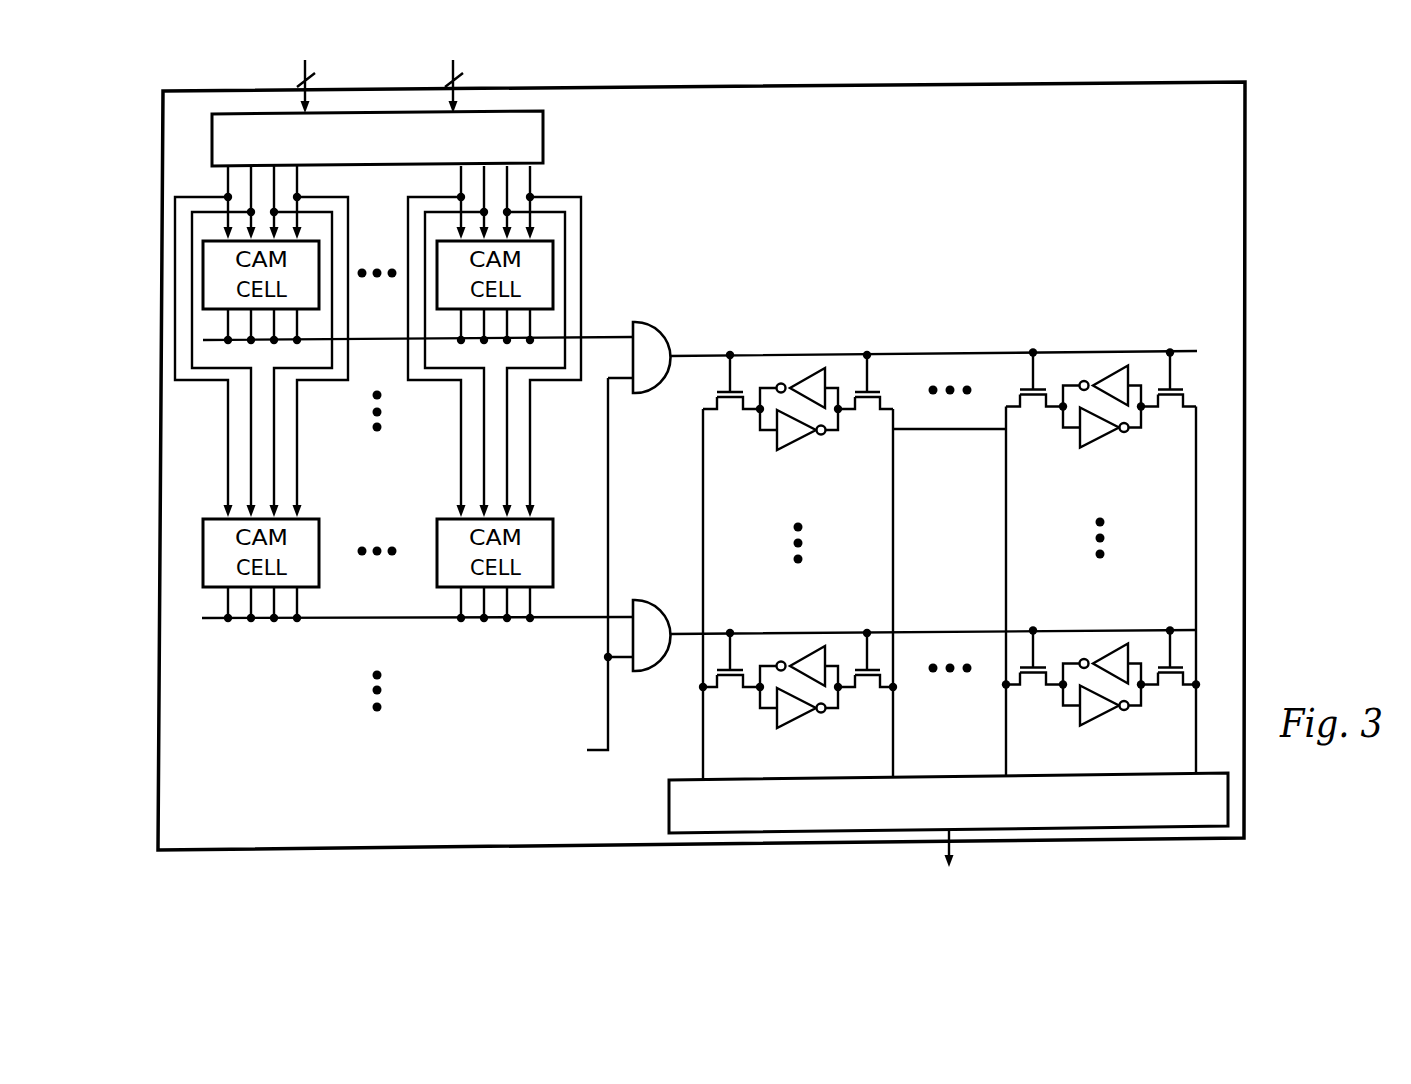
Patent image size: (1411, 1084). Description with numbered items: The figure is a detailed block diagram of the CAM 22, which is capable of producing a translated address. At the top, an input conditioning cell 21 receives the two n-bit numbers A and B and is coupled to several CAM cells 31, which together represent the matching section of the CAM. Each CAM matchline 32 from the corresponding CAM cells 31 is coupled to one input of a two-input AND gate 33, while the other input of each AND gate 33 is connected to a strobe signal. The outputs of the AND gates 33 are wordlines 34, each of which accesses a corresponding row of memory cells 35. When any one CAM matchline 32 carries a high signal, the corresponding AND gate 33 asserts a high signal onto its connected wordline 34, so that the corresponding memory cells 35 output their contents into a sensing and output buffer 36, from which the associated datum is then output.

The input conditioning cell 21 is at (543, 130).
The CAM 22 is at (1212, 128).
The CAM cell 31 is at (318, 238).
The CAM matchline 32 is at (366, 340).
The two-input AND gate 33 is at (661, 476).
The wordline 34 is at (933, 472).
The memory cell 35 is at (949, 560).
The sensing and output buffer 36 is at (669, 797).